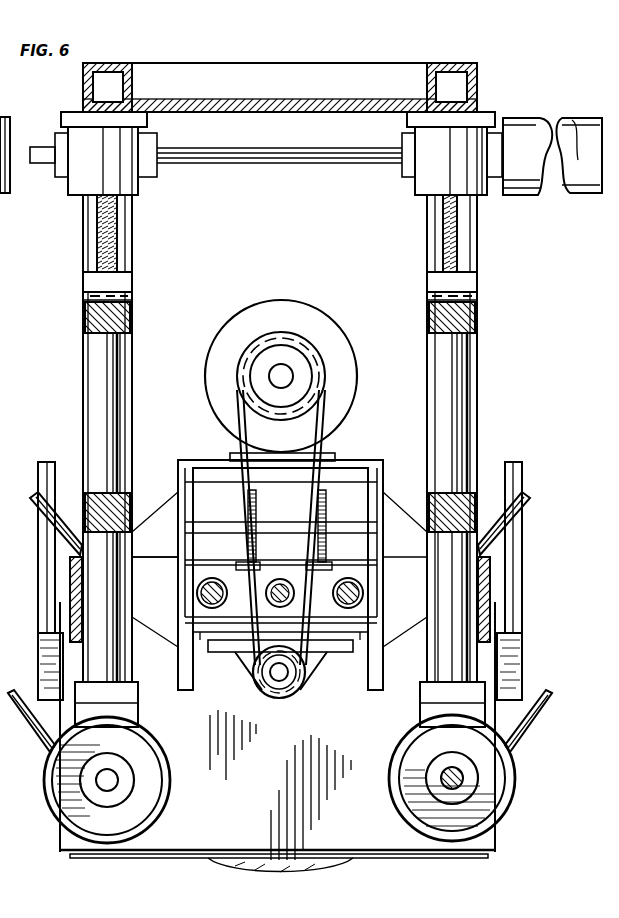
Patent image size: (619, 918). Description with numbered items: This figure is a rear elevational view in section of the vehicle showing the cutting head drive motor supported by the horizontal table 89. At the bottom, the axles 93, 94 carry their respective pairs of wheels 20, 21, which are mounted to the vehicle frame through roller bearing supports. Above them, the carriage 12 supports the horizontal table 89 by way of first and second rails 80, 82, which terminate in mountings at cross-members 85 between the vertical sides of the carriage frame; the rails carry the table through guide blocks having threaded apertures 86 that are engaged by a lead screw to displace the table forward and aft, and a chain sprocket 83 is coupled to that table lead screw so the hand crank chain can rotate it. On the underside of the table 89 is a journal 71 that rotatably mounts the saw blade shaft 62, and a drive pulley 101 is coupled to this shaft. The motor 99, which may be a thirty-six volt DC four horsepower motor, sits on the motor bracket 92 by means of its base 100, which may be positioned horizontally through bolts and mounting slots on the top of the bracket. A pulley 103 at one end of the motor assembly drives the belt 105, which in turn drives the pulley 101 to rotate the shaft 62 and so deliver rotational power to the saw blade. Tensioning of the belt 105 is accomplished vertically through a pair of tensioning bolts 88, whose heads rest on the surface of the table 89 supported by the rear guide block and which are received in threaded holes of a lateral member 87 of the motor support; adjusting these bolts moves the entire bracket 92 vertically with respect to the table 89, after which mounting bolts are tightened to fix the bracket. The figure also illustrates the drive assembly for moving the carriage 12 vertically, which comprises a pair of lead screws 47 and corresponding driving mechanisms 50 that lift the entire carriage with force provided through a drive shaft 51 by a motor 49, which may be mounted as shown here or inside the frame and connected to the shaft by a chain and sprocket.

The carriage 12 is at (478, 86).
The wheels 20 is at (52, 808).
The wheels 21 is at (508, 812).
The lead screws 47 is at (115, 245).
The motor 49 is at (520, 196).
The driving mechanisms 50 is at (130, 185).
The drive shaft 51 is at (305, 165).
The saw blade shaft 62 is at (283, 676).
The journal 71 is at (240, 660).
The first rail 80 is at (360, 600).
The second rail 82 is at (200, 604).
The chain sprocket 83 is at (42, 462).
The cross-members 85 is at (153, 565).
The threaded apertures 86 is at (284, 580).
The lateral member 87 is at (352, 528).
The tensioning bolts 88 is at (318, 512).
The horizontal table 89 is at (368, 660).
The motor bracket 92 is at (383, 466).
The axle 93 is at (118, 782).
The axle 94 is at (460, 776).
The motor 99 is at (320, 335).
The base 100 is at (335, 456).
The drive pulley 101 is at (265, 700).
The pulley 103 is at (320, 355).
The belt 105 is at (340, 440).